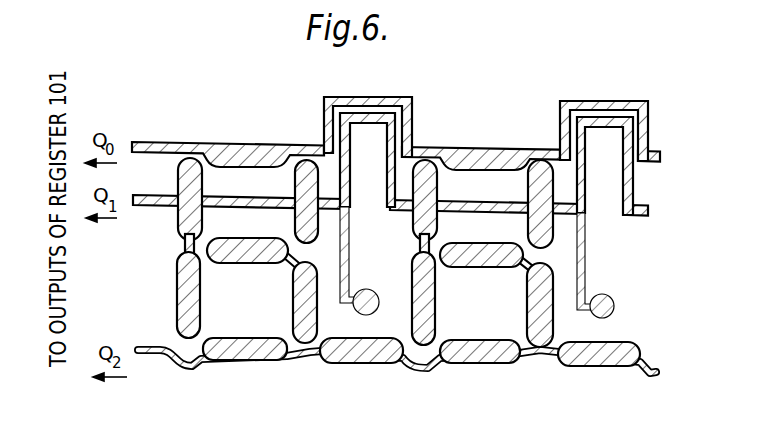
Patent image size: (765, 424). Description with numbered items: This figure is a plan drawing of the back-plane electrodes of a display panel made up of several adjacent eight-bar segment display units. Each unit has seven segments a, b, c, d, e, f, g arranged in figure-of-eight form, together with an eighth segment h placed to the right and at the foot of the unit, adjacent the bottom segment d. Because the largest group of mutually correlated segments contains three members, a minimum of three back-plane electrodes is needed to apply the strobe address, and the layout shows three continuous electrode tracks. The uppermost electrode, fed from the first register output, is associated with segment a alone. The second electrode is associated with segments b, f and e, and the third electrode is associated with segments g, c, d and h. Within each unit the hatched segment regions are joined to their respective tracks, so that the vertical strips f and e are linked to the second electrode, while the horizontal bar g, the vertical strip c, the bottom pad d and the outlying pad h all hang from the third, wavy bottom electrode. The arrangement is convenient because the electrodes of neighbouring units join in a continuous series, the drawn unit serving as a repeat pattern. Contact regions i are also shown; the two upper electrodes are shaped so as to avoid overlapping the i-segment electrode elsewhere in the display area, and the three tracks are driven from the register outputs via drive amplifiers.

The display segment a is at (243, 151).
The display segment b is at (306, 223).
The display segment c is at (302, 318).
The display segment d is at (248, 354).
The display segment e is at (186, 297).
The display segment f is at (188, 179).
The display segment g is at (237, 252).
The display segment h is at (368, 350).
The i-segment electrode i is at (372, 304).